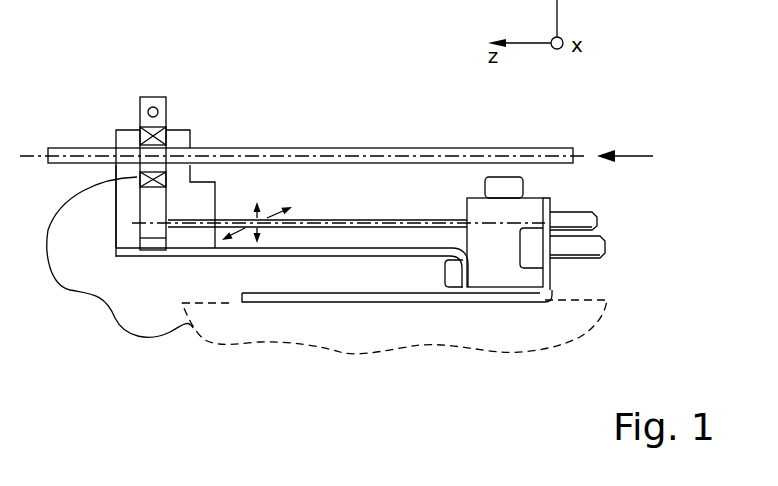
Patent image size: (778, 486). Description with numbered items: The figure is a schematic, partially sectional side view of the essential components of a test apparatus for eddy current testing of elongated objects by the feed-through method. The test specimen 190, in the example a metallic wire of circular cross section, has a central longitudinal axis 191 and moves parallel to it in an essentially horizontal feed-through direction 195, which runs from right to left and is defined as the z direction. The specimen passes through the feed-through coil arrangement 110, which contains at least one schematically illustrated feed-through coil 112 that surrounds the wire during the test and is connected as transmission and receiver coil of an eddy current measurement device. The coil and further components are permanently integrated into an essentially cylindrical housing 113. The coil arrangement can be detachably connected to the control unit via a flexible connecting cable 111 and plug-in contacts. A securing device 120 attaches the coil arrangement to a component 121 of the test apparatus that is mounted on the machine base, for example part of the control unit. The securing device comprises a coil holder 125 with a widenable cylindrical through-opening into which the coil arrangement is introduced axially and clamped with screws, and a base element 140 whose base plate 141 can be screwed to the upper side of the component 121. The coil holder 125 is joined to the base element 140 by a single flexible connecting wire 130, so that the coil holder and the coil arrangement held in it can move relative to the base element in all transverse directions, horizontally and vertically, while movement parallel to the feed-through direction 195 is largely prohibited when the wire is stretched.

The feed-through coil arrangement 110 is at (183, 108).
The flexible connecting cable 111 is at (117, 322).
The feed-through coil 112 is at (140, 131).
The housing 113 is at (183, 140).
The securing device 120 is at (253, 278).
The component 121 is at (528, 335).
The coil holder 125 is at (160, 102).
The connecting wire 130 is at (342, 222).
The base element 140 is at (533, 207).
The base plate 141 is at (372, 295).
The test specimen 190 is at (302, 125).
The central longitudinal axis 191 is at (355, 157).
The feed-through direction 195 is at (638, 156).